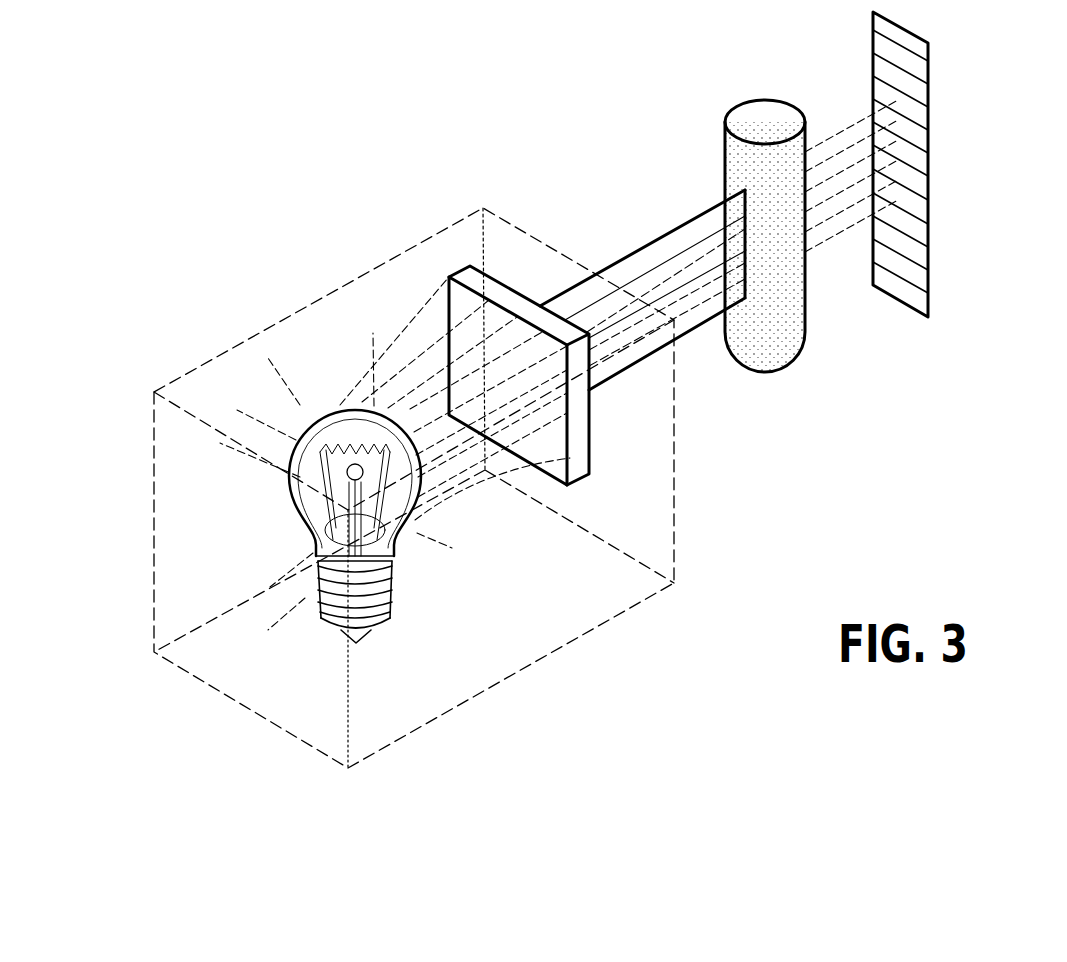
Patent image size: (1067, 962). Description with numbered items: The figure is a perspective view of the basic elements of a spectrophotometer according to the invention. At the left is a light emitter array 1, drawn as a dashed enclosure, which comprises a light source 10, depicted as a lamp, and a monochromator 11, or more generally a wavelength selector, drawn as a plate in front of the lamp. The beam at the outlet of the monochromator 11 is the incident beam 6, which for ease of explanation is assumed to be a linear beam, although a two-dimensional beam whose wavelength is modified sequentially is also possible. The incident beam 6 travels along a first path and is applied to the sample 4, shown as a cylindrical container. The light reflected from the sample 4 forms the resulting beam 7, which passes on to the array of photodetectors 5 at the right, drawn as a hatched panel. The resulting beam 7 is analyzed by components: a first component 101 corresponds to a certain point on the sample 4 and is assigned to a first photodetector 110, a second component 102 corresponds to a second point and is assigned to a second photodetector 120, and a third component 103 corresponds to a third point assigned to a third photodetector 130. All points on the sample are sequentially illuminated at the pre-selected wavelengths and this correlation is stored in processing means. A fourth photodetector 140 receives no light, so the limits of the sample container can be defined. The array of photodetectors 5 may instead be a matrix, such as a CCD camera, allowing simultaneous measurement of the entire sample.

The light emitter array 1 is at (285, 317).
The light source 10 is at (293, 497).
The monochromator 11 is at (578, 460).
The incident beam 6 is at (628, 284).
The first component 101 is at (610, 265).
The second component 102 is at (647, 270).
The third component 103 is at (695, 257).
The sample 4 is at (768, 352).
The resulting beam 7 is at (832, 255).
The array of photodetectors 5 is at (952, 163).
The first photodetector 110 is at (915, 113).
The second photodetector 120 is at (930, 143).
The third photodetector 130 is at (933, 170).
The fourth photodetector 140 is at (930, 253).